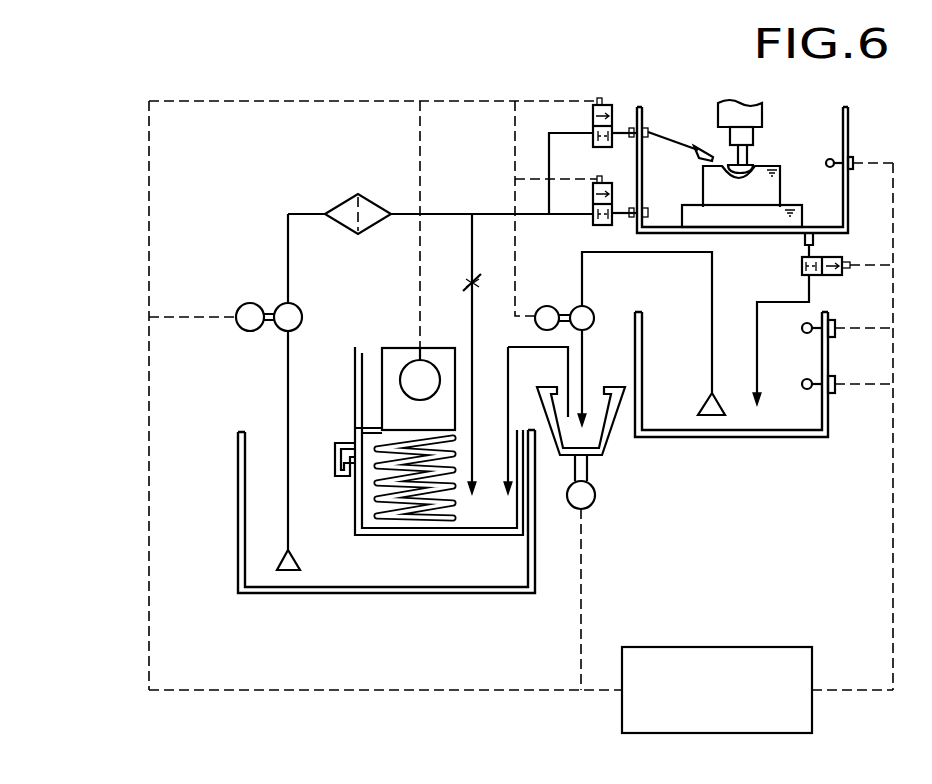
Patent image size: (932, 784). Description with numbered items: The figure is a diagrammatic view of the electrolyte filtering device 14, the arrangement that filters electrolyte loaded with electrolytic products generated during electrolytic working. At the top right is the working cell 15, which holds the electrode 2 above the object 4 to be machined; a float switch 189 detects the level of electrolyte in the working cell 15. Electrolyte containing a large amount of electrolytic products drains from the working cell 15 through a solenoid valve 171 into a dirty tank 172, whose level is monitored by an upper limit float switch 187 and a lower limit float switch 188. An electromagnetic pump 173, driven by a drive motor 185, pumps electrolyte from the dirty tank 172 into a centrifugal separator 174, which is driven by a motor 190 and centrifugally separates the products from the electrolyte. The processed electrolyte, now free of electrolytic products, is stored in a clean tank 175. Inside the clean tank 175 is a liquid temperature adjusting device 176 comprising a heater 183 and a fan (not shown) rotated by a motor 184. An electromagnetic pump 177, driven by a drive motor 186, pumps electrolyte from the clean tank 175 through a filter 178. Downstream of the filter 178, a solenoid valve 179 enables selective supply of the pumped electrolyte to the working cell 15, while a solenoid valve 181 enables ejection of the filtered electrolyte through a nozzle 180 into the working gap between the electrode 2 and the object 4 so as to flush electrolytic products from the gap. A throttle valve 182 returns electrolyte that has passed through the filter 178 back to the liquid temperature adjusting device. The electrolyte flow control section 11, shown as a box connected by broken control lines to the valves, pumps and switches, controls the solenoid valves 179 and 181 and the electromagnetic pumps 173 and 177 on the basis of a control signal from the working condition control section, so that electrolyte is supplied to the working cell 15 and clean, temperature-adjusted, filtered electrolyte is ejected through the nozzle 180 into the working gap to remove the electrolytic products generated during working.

The electrode 2 is at (746, 168).
The object to be machined 4 is at (782, 178).
The electrolyte flow control section 11 is at (720, 647).
The electrolyte filtering device 14 is at (374, 90).
The working cell 15 is at (849, 110).
The solenoid valve 171 is at (840, 258).
The dirty tank 172 is at (780, 438).
The electromagnetic pump 173 is at (592, 310).
The centrifugal separator 174 is at (606, 450).
The clean tank 175 is at (363, 595).
The liquid temperature adjusting device 176 is at (355, 512).
The electromagnetic pump 177 is at (303, 313).
The filter 178 is at (341, 206).
The solenoid valve 179 is at (594, 222).
The nozzle 180 is at (706, 152).
The solenoid valve 181 is at (611, 104).
The throttle valve 182 is at (469, 289).
The heater 183 is at (433, 524).
The motor 184 is at (401, 380).
The drive motor 185 is at (547, 306).
The drive motor 186 is at (244, 304).
The upper limit float switch 187 is at (836, 320).
The lower limit float switch 188 is at (836, 376).
The float switch 189 is at (854, 160).
The motor 190 is at (593, 500).